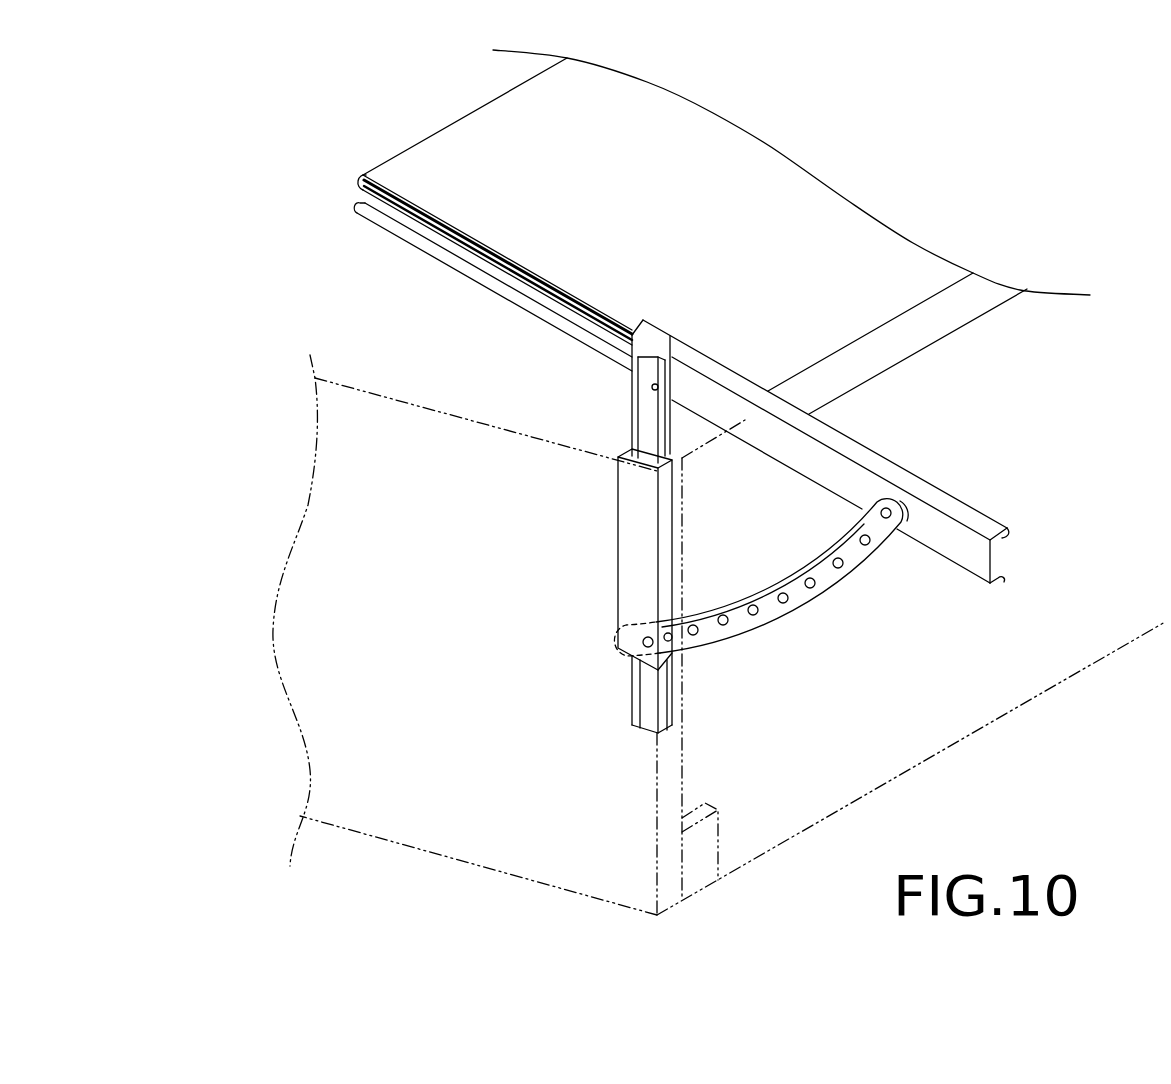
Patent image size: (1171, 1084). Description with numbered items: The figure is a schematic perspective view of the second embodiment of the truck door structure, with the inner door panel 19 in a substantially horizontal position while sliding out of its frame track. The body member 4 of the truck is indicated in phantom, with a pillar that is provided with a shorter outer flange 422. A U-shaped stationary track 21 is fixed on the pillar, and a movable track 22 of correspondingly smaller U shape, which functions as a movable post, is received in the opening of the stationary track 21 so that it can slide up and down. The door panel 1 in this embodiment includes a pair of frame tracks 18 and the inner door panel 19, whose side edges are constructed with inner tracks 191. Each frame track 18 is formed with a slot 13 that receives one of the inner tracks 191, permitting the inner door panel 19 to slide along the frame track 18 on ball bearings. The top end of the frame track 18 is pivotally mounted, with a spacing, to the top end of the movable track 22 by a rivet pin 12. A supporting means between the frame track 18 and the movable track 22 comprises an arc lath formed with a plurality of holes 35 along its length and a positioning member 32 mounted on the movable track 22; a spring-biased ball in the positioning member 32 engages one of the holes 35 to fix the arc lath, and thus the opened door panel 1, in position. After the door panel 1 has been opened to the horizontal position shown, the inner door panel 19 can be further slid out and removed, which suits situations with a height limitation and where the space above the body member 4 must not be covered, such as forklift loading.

The door panel 1 is at (804, 204).
The inner door panel 19 is at (607, 214).
The inner track 191 is at (438, 257).
The movable track 22 is at (659, 356).
The rivet pin 12 is at (658, 387).
The stationary track 21 is at (628, 476).
The frame track 18 is at (975, 518).
The slot 13 is at (1003, 548).
The positioning member 32 is at (800, 600).
The holes 35 is at (847, 563).
The body member 4 is at (347, 762).
The outer flange 422 is at (707, 850).